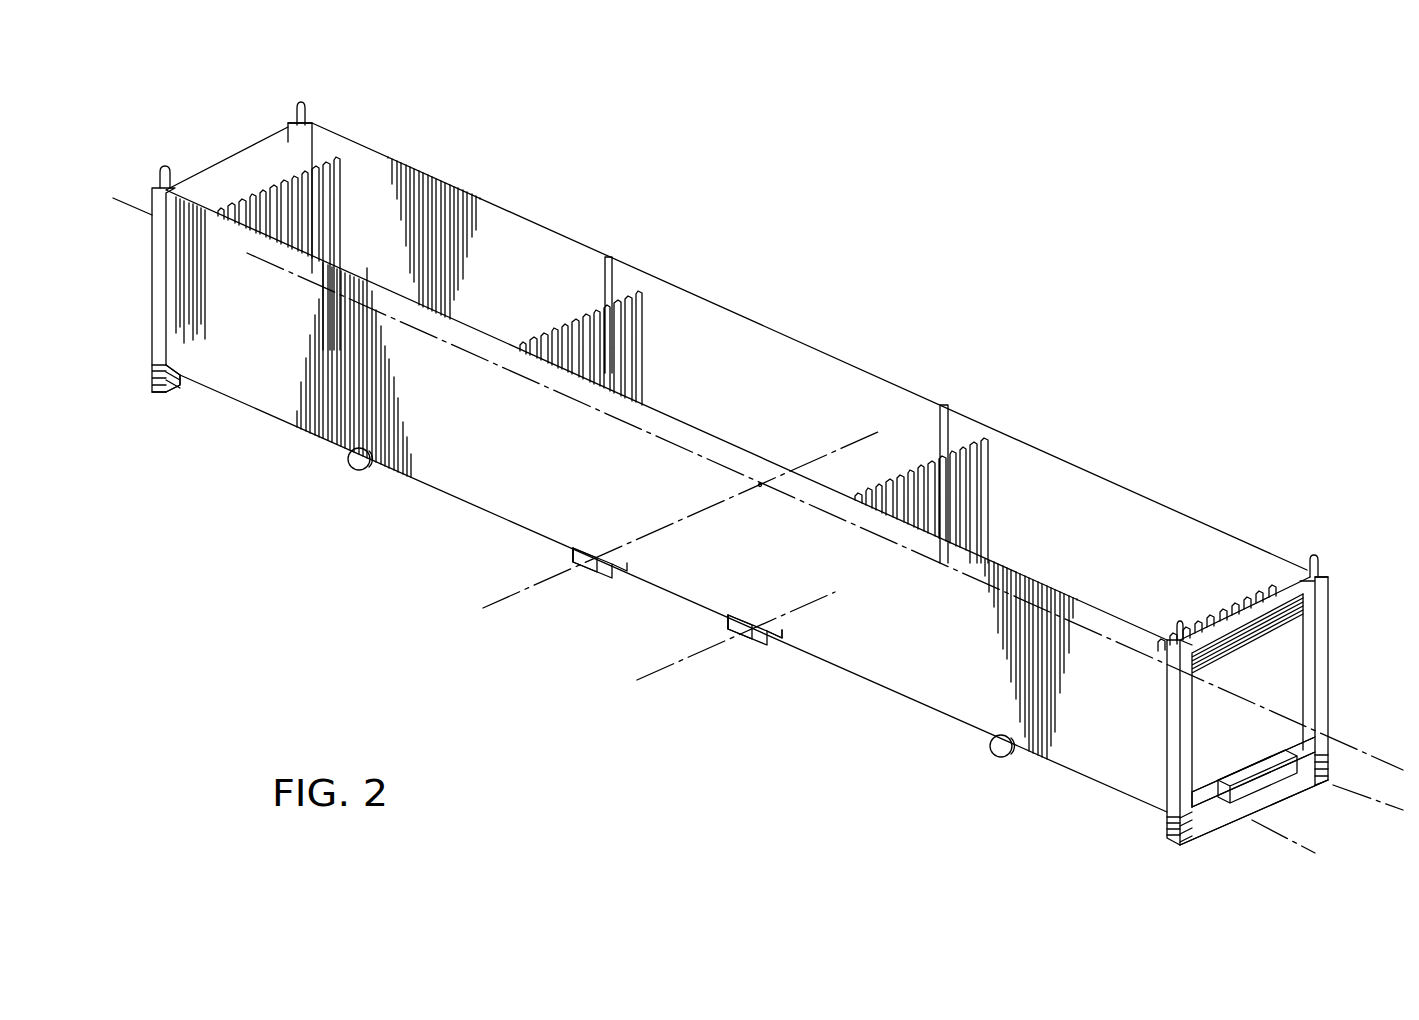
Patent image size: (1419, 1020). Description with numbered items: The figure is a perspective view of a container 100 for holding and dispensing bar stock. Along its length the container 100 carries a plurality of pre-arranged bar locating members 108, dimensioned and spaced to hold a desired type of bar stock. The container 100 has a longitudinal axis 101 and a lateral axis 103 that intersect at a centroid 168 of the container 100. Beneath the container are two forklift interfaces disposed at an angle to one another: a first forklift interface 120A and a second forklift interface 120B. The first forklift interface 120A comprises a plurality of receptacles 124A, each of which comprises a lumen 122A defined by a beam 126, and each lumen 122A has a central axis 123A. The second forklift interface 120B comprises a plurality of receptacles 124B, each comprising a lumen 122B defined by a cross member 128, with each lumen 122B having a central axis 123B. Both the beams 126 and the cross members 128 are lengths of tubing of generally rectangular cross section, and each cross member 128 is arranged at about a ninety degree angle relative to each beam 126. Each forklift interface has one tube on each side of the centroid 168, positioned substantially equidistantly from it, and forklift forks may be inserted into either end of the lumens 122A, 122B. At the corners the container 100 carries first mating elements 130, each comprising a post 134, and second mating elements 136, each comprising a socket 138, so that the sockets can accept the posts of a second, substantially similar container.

The container 100 is at (995, 284).
The longitudinal axis 101 is at (121, 197).
The lateral axis 103 is at (880, 432).
The bar locating members 108 is at (272, 193).
The first forklift interface 120A is at (1346, 834).
The second forklift interface 120B is at (559, 651).
The lumen 122A is at (1200, 812).
The lumen 122B is at (726, 622).
The central axis 123A is at (1290, 845).
The central axis 123B is at (503, 605).
The receptacle 124A is at (1230, 835).
The receptacle 124B is at (560, 554).
The beam 126 is at (1293, 752).
The cross member 128 is at (777, 645).
The first mating element 130 is at (291, 103).
The post 134 is at (310, 108).
The second mating element 136 is at (180, 397).
The socket 138 is at (152, 398).
The centroid 168 is at (763, 485).